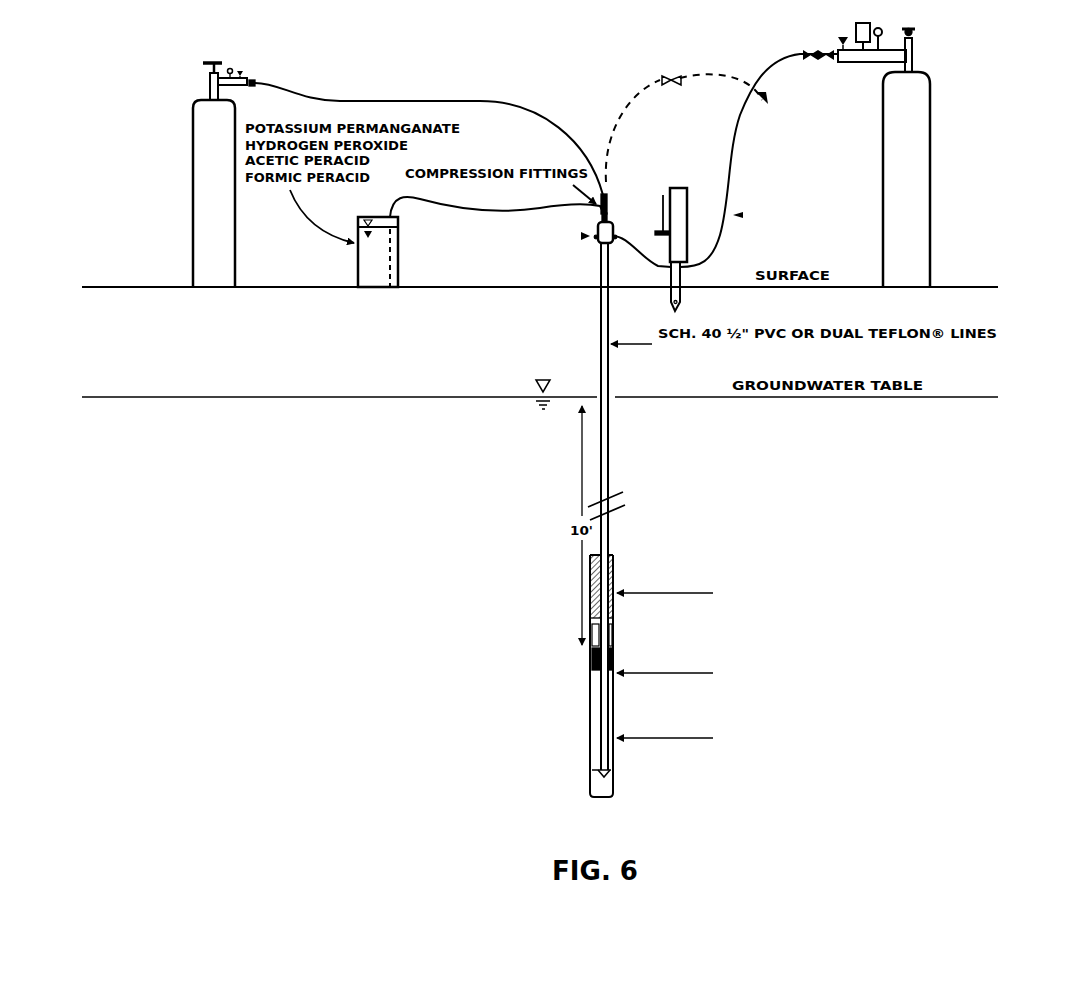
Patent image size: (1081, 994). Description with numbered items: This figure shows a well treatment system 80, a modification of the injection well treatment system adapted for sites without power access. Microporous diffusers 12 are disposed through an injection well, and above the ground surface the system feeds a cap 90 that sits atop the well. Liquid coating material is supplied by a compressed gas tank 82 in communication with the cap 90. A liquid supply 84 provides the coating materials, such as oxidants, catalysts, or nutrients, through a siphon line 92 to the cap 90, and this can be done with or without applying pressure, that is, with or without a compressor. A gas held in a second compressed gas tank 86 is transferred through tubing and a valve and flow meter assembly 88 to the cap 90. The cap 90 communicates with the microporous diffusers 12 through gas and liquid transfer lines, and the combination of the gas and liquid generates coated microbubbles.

The well treatment system 80 is at (585, 31).
The compressed gas tank 82 is at (193, 130).
The liquid supply 84 is at (399, 266).
The compressed gas tank 86 is at (933, 115).
The valve and flow meter assembly 88 is at (688, 196).
The cap 90 is at (596, 245).
The siphon line 92 is at (465, 212).
The microporous diffusers 12 is at (590, 692).